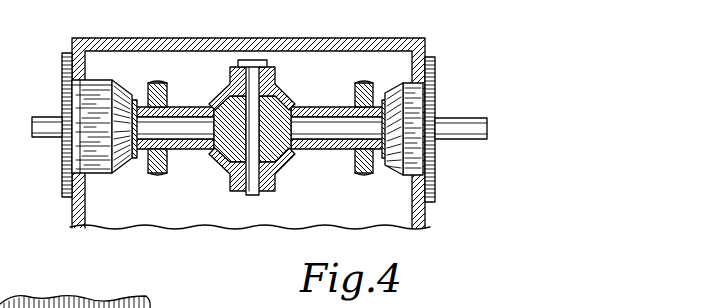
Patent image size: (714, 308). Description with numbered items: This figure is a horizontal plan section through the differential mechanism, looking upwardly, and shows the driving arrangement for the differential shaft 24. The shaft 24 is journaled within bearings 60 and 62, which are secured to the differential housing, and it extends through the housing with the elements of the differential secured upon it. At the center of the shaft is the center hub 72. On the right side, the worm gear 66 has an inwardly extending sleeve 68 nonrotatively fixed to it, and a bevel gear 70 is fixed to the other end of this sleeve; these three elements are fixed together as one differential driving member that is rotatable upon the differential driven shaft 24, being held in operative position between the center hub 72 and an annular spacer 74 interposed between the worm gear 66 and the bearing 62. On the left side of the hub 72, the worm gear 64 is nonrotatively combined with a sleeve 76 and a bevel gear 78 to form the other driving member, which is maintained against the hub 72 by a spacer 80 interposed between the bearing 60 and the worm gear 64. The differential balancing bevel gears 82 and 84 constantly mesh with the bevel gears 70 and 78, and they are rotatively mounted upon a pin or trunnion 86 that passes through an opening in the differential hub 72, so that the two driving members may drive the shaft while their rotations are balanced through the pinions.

The differential shaft 24 is at (472, 140).
The bearing 60 is at (88, 97).
The bearing 62 is at (408, 110).
The worm gear 64 is at (157, 176).
The worm gear 66 is at (364, 174).
The sleeve 68 is at (340, 152).
The bevel gear 70 is at (293, 157).
The center hub 72 is at (293, 102).
The annular spacer 74 is at (383, 108).
The sleeve 76 is at (179, 106).
The bevel gear 78 is at (208, 156).
The spacer 80 is at (143, 106).
The differential balancing bevel gear 82 is at (272, 90).
The differential balancing bevel gear 84 is at (234, 190).
The pin or trunnion 86 is at (255, 196).